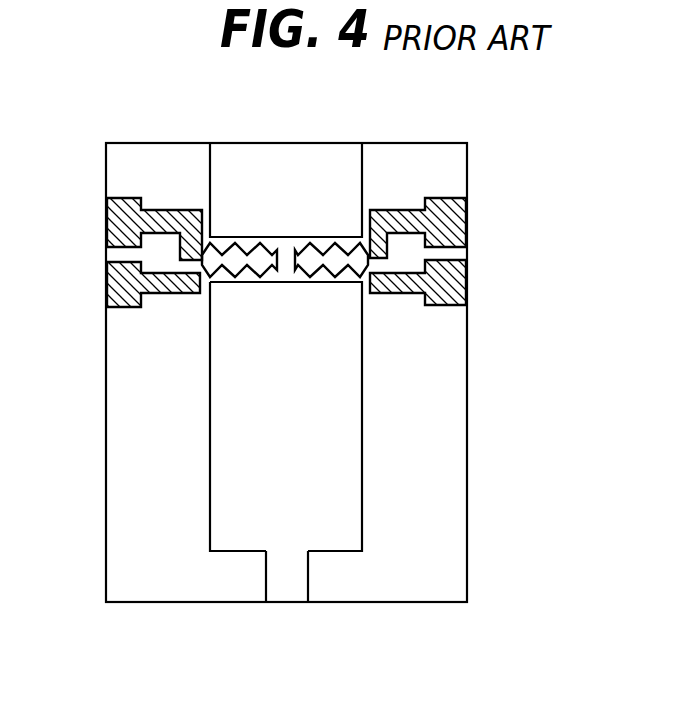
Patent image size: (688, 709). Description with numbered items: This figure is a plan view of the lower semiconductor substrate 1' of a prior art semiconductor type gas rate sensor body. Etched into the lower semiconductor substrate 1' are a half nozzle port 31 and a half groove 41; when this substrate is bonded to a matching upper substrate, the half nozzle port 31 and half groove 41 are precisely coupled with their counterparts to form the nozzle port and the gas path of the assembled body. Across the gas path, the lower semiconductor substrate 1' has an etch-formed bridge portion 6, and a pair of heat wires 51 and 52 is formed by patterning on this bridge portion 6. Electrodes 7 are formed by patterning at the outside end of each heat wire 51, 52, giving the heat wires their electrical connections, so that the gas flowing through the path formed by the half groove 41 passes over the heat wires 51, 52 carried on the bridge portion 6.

The lower semiconductor substrate 1' is at (325, 372).
The bridge portion 6 is at (325, 237).
The electrodes 7 is at (117, 222).
The half groove 41 is at (225, 390).
The half nozzle port 31 is at (292, 582).
The heat wire 51 is at (238, 277).
The heat wire 52 is at (335, 277).